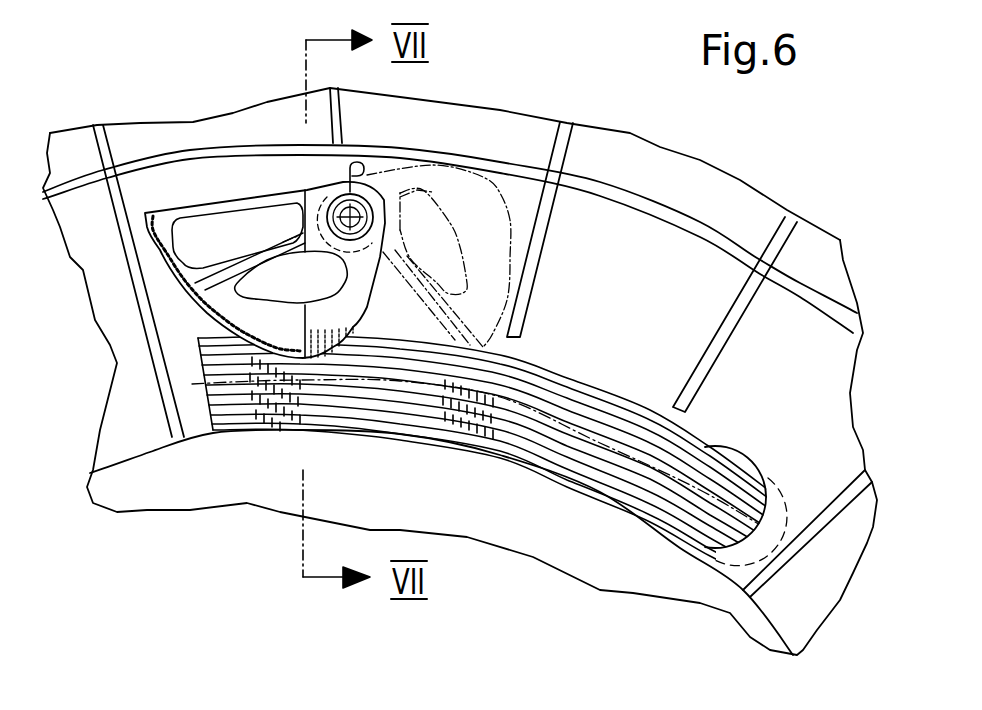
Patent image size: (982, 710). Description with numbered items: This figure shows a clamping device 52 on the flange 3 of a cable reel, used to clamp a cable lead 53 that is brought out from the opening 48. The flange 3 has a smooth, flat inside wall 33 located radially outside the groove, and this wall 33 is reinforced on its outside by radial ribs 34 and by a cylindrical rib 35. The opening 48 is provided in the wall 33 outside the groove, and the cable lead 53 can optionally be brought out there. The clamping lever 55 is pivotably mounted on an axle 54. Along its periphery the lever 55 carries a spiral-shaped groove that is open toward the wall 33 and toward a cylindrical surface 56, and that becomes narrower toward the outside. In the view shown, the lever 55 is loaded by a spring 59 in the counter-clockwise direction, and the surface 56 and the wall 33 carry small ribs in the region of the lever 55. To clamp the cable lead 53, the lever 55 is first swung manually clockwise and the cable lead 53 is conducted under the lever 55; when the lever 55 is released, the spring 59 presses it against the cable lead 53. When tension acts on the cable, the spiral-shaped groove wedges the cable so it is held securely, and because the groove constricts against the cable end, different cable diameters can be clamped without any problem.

The flange 3 is at (750, 160).
The inside wall 33 is at (625, 170).
The radial ribs 34 is at (797, 220).
The cylindrical rib 35 is at (850, 262).
The opening 48 is at (742, 462).
The clamping device 52 is at (157, 185).
The cable lead 53 is at (575, 395).
The axle 54 is at (378, 202).
The clamping lever 55 is at (273, 317).
The cylindrical surface 56 is at (192, 425).
The spring 59 is at (430, 167).